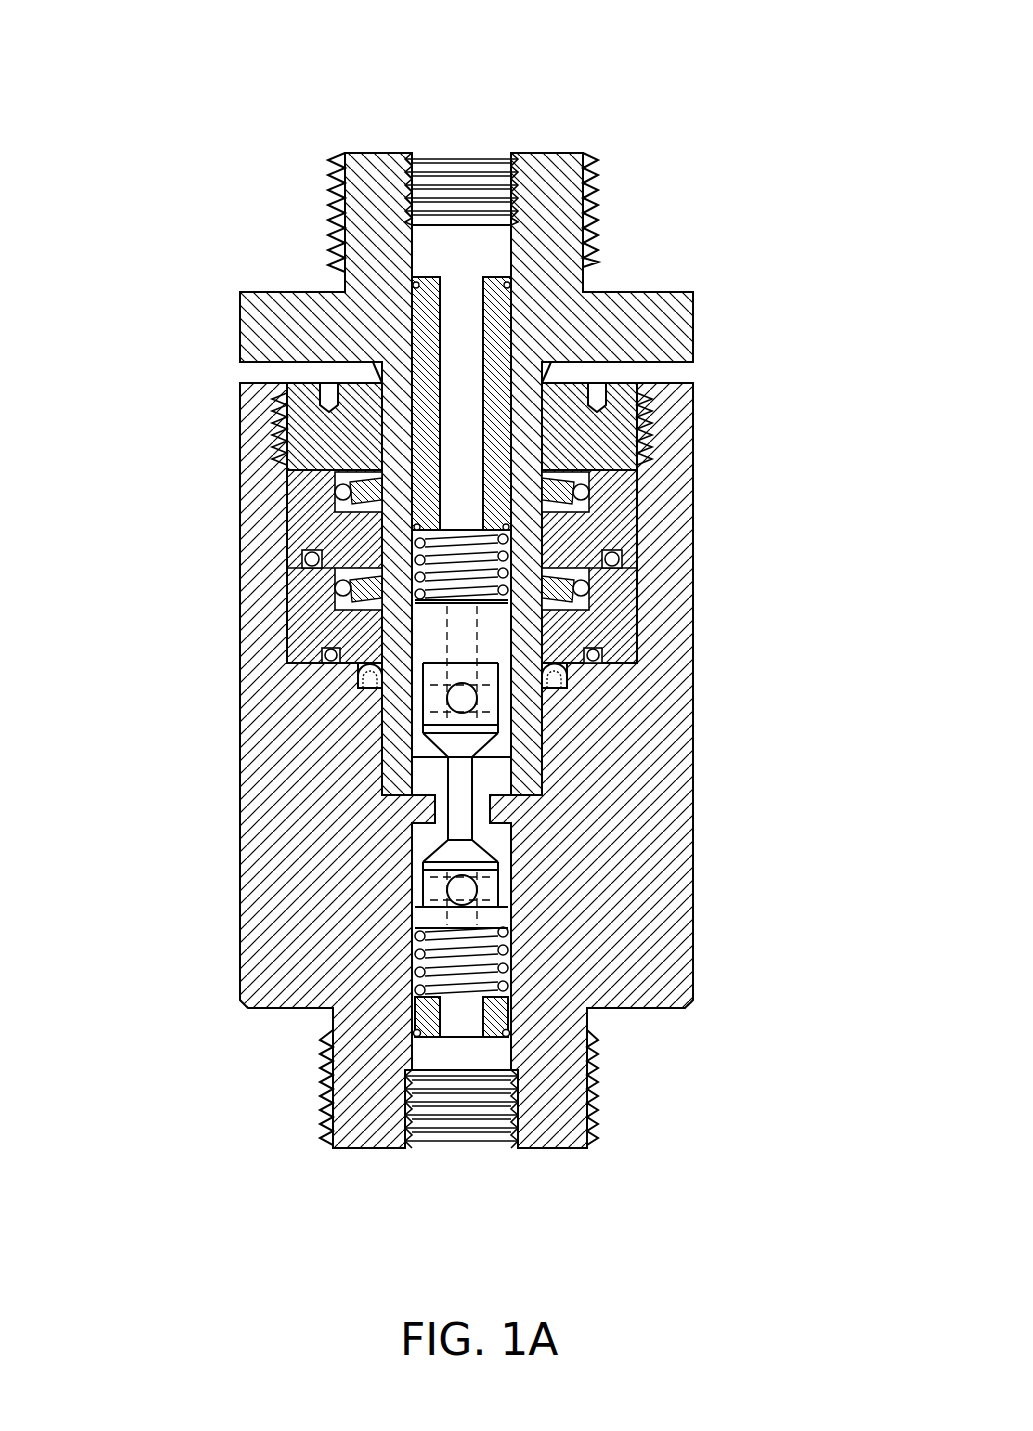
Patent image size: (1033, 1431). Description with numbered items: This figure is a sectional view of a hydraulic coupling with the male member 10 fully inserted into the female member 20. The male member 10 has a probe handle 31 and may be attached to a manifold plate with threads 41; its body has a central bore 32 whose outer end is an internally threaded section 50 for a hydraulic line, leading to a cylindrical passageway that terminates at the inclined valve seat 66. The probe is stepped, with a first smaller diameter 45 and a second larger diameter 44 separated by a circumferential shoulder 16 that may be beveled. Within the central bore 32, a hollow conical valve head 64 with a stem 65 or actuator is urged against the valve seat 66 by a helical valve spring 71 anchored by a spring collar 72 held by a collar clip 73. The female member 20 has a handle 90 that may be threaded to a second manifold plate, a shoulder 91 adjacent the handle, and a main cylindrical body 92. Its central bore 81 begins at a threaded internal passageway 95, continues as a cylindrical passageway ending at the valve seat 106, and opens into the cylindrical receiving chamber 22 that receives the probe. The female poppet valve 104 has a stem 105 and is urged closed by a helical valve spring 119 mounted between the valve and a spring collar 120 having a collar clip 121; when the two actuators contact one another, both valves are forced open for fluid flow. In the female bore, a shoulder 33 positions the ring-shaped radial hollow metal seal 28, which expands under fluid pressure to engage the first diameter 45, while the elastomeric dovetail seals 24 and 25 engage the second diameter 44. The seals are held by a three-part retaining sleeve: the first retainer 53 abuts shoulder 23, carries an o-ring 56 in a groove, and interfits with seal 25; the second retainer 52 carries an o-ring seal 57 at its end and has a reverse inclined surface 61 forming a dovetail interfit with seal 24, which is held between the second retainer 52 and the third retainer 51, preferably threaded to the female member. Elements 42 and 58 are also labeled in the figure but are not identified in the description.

The male member 10 is at (517, 474).
The female member 20 is at (730, 1027).
The probe handle 31 is at (278, 212).
The threads 41 is at (670, 210).
The internally threaded section 50 is at (575, 166).
The central bore 32 is at (523, 265).
The flange 42 is at (517, 335).
The second larger diameter 44 is at (352, 573).
The spring collar 72 is at (332, 403).
The collar clip 73 is at (344, 257).
The third retainer 51 is at (541, 414).
The second retainer 52 is at (548, 431).
The first retainer 53 is at (676, 566).
The circumferential shoulder 16 is at (548, 585).
The reverse inclined surface 61 is at (250, 471).
The O-ring seal 58 is at (237, 577).
The o-ring seal 57 is at (222, 535).
The o-ring 56 is at (232, 637).
The elastomeric dovetail seal 24 is at (691, 490).
The elastomeric dovetail seal 25 is at (691, 606).
The shoulder 33 is at (243, 718).
The radial hollow metal seal 28 is at (676, 704).
The shoulder 23 is at (238, 690).
The helical valve spring 71 is at (612, 567).
The valve head 64 is at (609, 695).
The valve seat 66 is at (627, 798).
The stem 65 is at (619, 832).
The first smaller diameter 45 is at (324, 796).
The main cylindrical body 92 is at (310, 889).
The valve seat 106 is at (302, 930).
The cylindrical receiving chamber 22 is at (613, 879).
The stem 105 is at (621, 910).
The poppet valve 104 is at (624, 959).
The helical valve spring 119 is at (290, 986).
The collar clip 121 is at (353, 1093).
The spring collar 120 is at (586, 1069).
The central bore 81 is at (391, 1142).
The threaded internal passageway 95 is at (542, 1153).
The handle 90 is at (532, 1105).
The shoulder 91 is at (403, 1060).